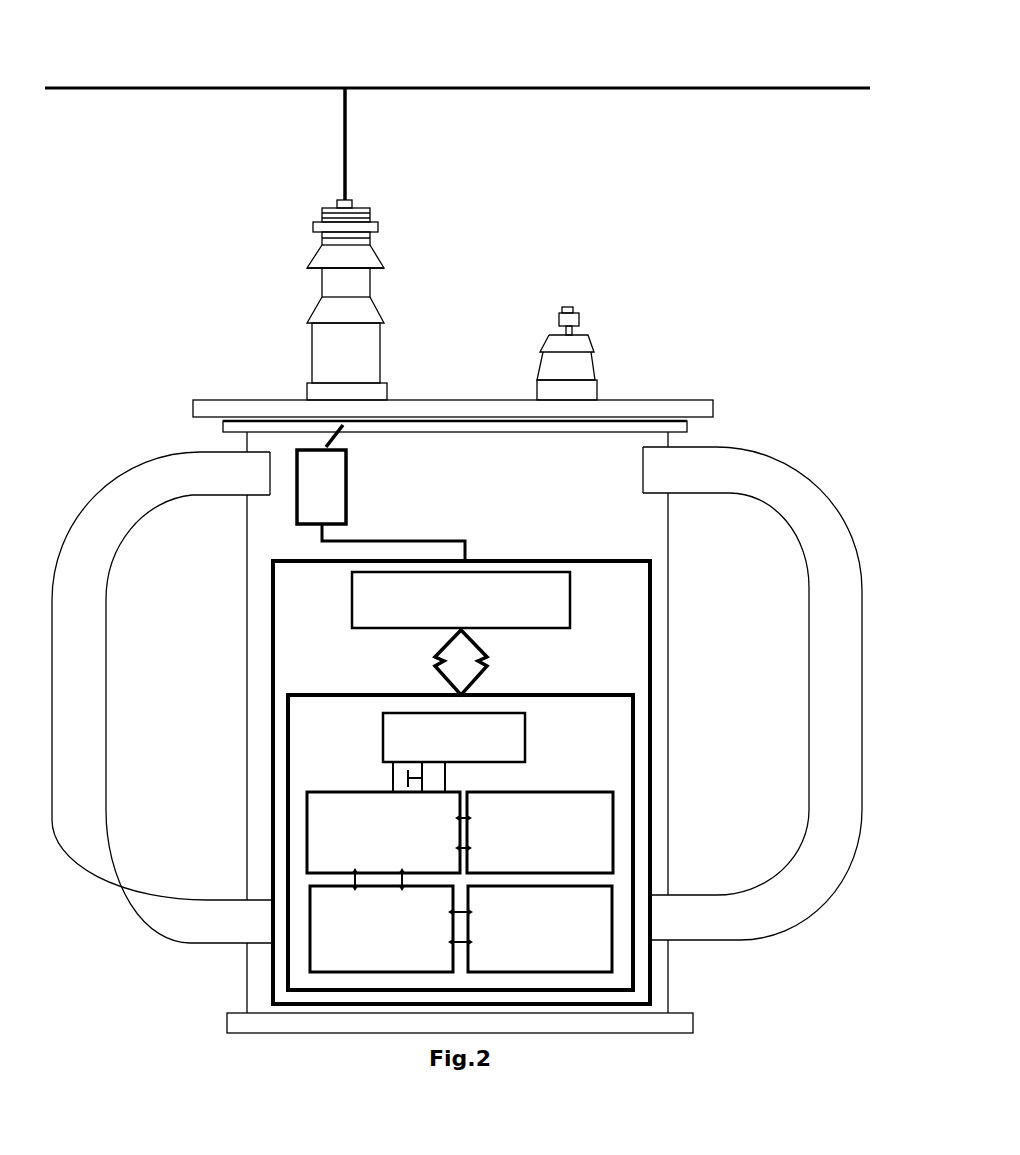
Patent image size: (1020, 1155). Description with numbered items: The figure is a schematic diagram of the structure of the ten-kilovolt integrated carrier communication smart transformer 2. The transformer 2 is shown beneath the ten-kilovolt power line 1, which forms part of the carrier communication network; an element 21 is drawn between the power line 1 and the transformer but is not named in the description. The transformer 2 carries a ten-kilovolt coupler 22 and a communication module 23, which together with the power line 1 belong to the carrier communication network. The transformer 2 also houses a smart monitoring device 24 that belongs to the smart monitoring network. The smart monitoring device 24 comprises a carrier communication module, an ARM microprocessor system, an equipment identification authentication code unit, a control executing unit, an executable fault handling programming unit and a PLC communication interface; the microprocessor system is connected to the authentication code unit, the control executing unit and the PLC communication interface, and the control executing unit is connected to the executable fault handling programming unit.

The 10 kV power line 1 is at (457, 54).
The 10 kV integrated carrier communication smart transformer 2 is at (457, 526).
The high-voltage lead wire 21 is at (285, 127).
The 10 kV coupler 22 is at (301, 381).
The communication module 23 is at (534, 628).
The smart monitoring device 24 is at (516, 821).